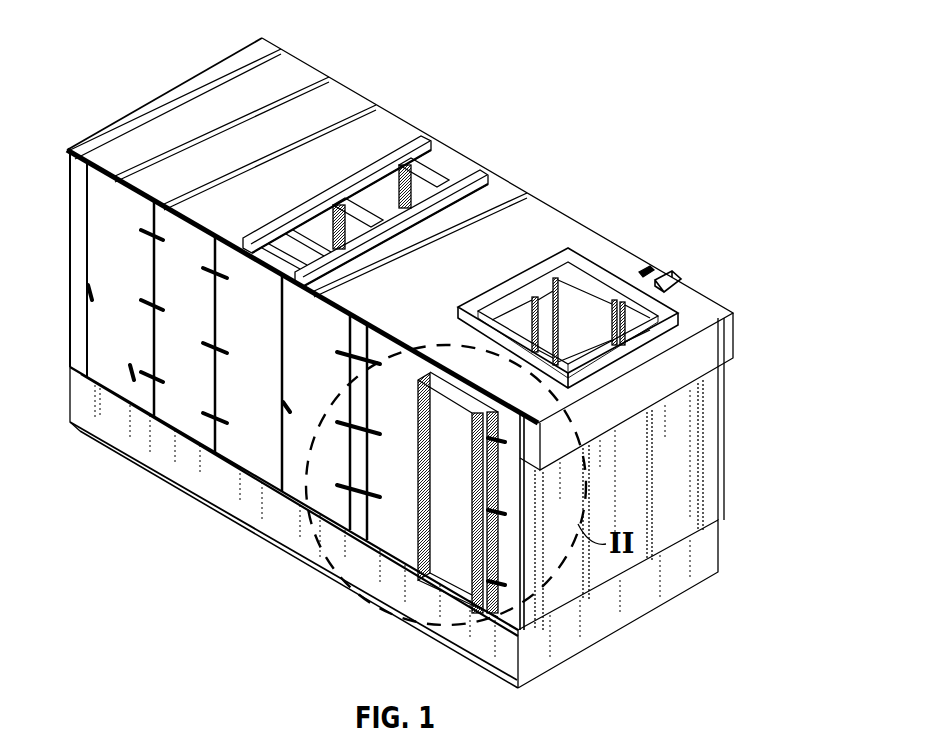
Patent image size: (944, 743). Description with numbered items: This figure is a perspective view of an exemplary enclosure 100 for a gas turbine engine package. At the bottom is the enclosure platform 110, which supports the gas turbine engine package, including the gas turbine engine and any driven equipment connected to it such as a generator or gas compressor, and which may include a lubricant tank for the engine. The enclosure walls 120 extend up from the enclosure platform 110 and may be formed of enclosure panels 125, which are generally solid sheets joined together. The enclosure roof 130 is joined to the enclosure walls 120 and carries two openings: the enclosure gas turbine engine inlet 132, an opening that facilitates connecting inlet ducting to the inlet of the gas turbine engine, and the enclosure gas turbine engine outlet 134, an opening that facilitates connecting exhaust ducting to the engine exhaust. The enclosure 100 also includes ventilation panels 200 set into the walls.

The enclosure 100 is at (536, 181).
The enclosure platform 110 is at (300, 527).
The enclosure walls 120 is at (749, 397).
The enclosure panels 125 is at (177, 350).
The enclosure roof 130 is at (556, 229).
The enclosure gas turbine engine inlet 132 is at (420, 174).
The enclosure gas turbine engine outlet 134 is at (566, 265).
The ventilation panels 200 is at (452, 540).